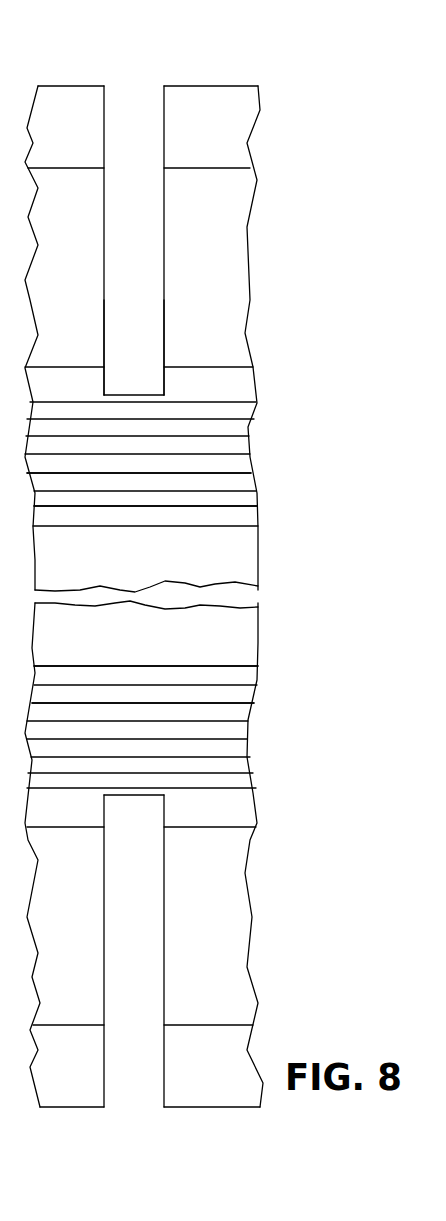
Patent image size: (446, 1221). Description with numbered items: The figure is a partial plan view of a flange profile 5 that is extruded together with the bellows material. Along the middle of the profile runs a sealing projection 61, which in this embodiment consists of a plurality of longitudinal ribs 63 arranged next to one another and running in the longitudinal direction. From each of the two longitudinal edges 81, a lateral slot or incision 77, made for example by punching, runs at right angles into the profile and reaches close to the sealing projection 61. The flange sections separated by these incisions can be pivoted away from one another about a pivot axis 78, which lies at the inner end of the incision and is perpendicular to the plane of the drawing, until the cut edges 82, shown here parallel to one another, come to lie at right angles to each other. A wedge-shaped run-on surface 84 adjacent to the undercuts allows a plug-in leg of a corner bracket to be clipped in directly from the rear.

The flange profile 5 is at (272, 180).
The sealing projection 61 is at (177, 427).
The longitudinal ribs 63 is at (242, 507).
The lateral slots or incisions 77 is at (135, 282).
The pivot axis 78 is at (133, 392).
The longitudinal edges 81 is at (61, 1112).
The cut edges 82 is at (107, 227).
The wedge-shaped run-on surface 84 is at (57, 84).